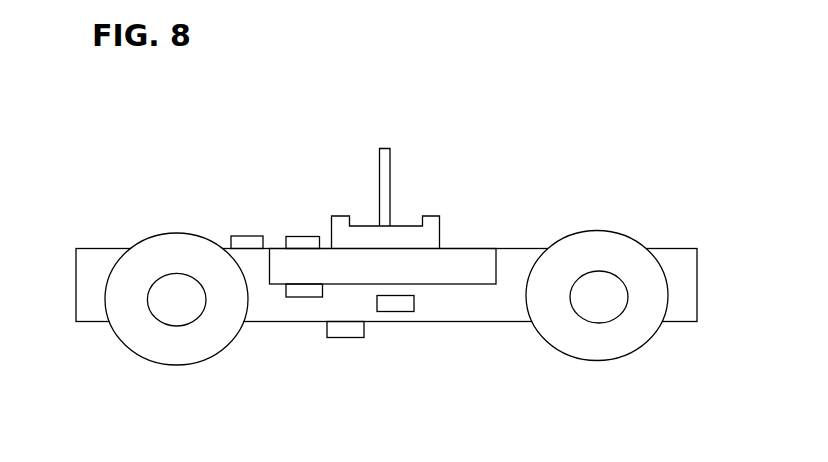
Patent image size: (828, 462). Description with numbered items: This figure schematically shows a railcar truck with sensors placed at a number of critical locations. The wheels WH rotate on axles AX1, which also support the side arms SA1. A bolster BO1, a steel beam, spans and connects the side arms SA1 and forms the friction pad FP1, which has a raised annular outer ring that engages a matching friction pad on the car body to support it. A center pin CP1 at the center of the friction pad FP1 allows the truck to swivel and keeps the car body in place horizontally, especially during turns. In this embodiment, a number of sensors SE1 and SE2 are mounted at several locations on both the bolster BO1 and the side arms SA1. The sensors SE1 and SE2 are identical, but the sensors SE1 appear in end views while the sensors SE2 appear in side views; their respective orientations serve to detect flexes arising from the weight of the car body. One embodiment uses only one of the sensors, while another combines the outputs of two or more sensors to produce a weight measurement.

The wheels WH is at (167, 338).
The axles AX1 is at (168, 287).
The sensor SE1 is at (299, 242).
The sensor SE2 is at (240, 239).
The center pin CP1 is at (382, 183).
The friction pad FP1 is at (430, 230).
The bolster BO1 is at (471, 264).
The side arms SA1 is at (470, 303).